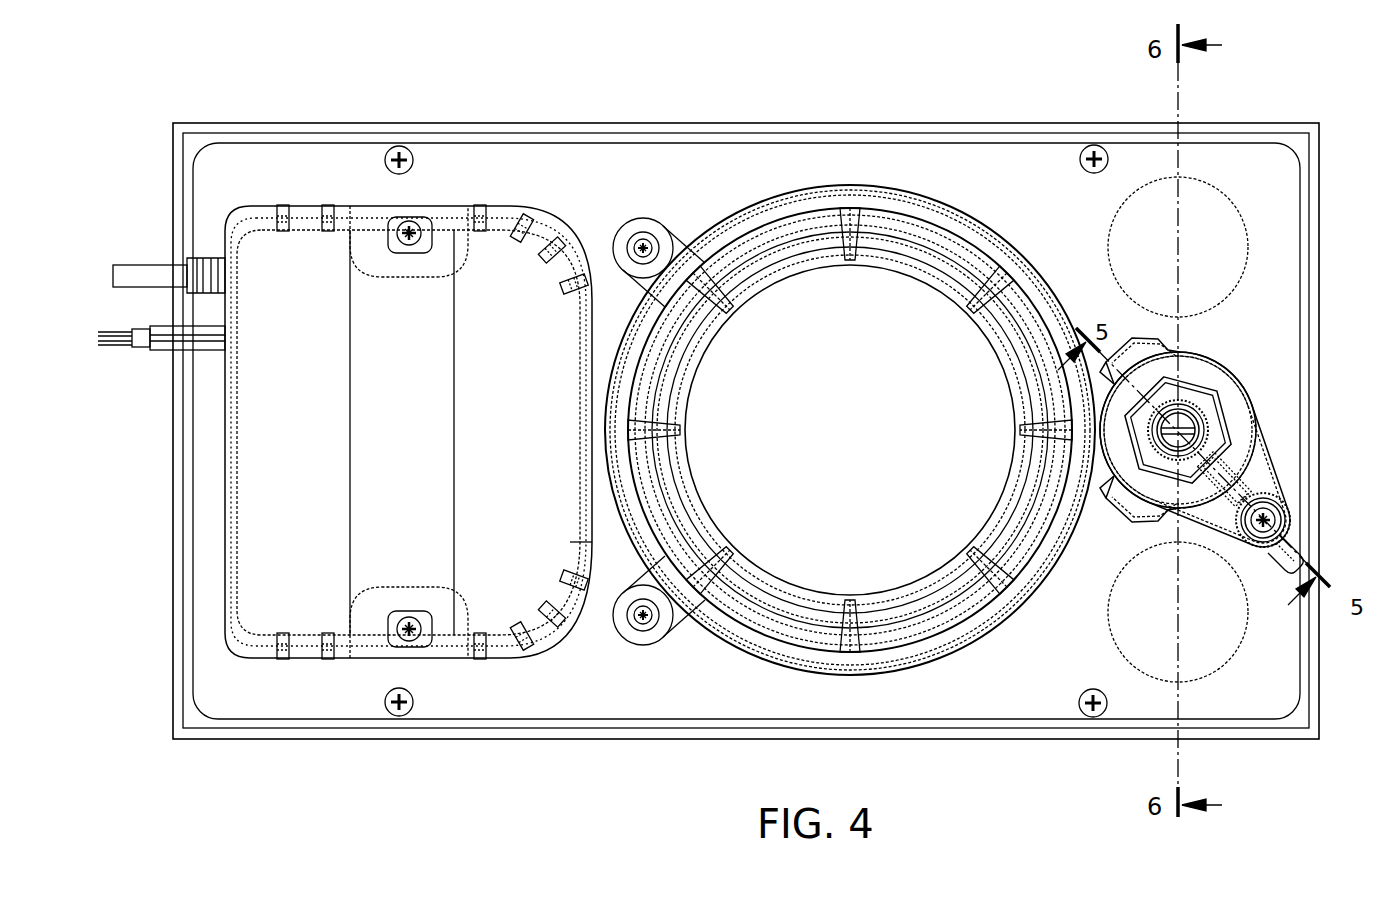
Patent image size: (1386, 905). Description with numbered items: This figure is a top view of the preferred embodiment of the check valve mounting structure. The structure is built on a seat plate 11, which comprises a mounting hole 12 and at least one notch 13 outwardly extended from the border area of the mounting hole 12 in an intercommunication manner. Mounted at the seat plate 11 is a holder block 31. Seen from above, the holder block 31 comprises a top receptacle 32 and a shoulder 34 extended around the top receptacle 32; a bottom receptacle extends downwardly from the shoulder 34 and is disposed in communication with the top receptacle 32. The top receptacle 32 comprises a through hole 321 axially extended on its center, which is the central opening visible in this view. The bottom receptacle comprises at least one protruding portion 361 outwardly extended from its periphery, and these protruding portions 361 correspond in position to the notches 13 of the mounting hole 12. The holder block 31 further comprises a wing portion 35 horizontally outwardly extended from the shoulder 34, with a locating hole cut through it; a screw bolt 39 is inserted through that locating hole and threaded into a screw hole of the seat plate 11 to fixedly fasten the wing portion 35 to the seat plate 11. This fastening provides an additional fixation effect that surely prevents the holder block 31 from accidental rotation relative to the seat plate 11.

The seat plate 11 is at (1007, 177).
The mounting hole 12 is at (1248, 388).
The notch 13 is at (1150, 375).
The holder block 31 is at (1268, 452).
The top receptacle 32 is at (1232, 377).
The through hole 321 is at (1252, 548).
The shoulder 34 is at (1193, 373).
The wing portion 35 is at (1268, 482).
The protruding portion 361 is at (1128, 352).
The screw bolt 39 is at (1282, 522).